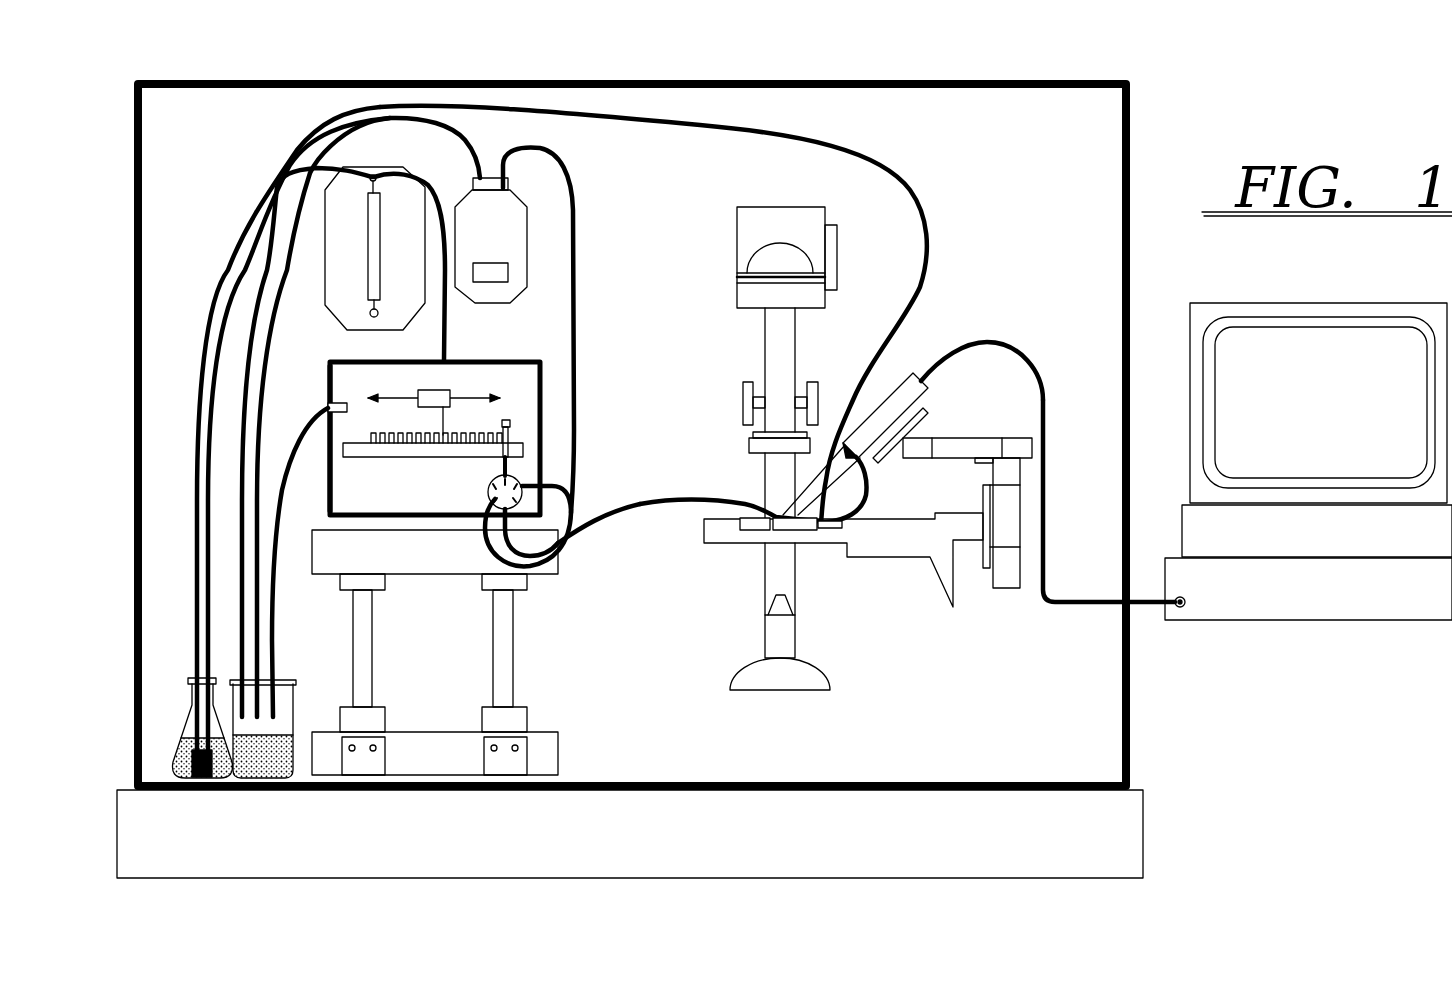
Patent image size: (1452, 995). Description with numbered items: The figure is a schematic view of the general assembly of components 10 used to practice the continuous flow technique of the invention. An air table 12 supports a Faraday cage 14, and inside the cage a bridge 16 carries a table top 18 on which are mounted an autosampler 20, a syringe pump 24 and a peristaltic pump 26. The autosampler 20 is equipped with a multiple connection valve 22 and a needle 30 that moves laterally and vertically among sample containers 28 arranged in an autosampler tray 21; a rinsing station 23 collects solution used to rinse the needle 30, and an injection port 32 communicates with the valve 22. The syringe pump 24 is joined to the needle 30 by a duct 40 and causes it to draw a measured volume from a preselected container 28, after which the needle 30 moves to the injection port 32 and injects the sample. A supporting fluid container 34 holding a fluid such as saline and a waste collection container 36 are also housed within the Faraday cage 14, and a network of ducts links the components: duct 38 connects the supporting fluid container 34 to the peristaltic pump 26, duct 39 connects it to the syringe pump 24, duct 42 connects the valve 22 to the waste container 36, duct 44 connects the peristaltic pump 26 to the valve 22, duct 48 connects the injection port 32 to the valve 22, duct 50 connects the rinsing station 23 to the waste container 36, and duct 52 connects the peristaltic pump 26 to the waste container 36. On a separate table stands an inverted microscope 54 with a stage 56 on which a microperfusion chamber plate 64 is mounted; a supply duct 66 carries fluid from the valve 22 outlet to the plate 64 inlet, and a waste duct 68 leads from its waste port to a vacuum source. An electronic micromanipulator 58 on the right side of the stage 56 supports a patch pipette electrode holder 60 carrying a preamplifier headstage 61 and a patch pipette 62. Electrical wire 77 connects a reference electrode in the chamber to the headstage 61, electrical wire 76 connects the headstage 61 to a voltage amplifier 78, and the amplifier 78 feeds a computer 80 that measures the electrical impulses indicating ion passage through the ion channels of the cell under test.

The assembly of components 10 is at (1197, 148).
The air table 12 is at (857, 858).
The Faraday cage 14 is at (1070, 782).
The bridge 16 is at (522, 689).
The table top 18 is at (560, 570).
The autosampler 20 is at (357, 360).
The autosampler tray 21 is at (347, 455).
The multiple connection valve 22 is at (483, 500).
The rinsing station 23 is at (327, 382).
The syringe pump 24 is at (330, 214).
The peristaltic pump 26 is at (475, 243).
The sample containers 28 is at (385, 430).
The needle 30 is at (455, 380).
The injection port 32 is at (507, 420).
The supporting fluid container 34 is at (185, 728).
The waste collection container 36 is at (292, 715).
The duct 38 is at (230, 253).
The duct 39 is at (273, 187).
The duct 40 is at (447, 207).
The duct 42 is at (401, 517).
The duct 44 is at (580, 303).
The duct 48 is at (520, 486).
The duct 50 is at (283, 520).
The duct 52 is at (253, 360).
The inverted microscope 54 is at (731, 309).
The microscope stage 56 is at (815, 547).
The electronic micromanipulator 58 is at (1023, 473).
The patch pipette electrode holder 60 is at (928, 410).
The preamplifier (headstage) 61 is at (912, 373).
The patch pipette 62 is at (813, 477).
The microperfusion chamber plate 64 is at (747, 513).
The supply duct 66 is at (600, 527).
The waste duct 68 is at (913, 192).
The electrical wire 76 is at (1047, 563).
The electrical wire 77 is at (863, 518).
The voltage amplifier 78 is at (1235, 593).
The computer 80 is at (1192, 533).